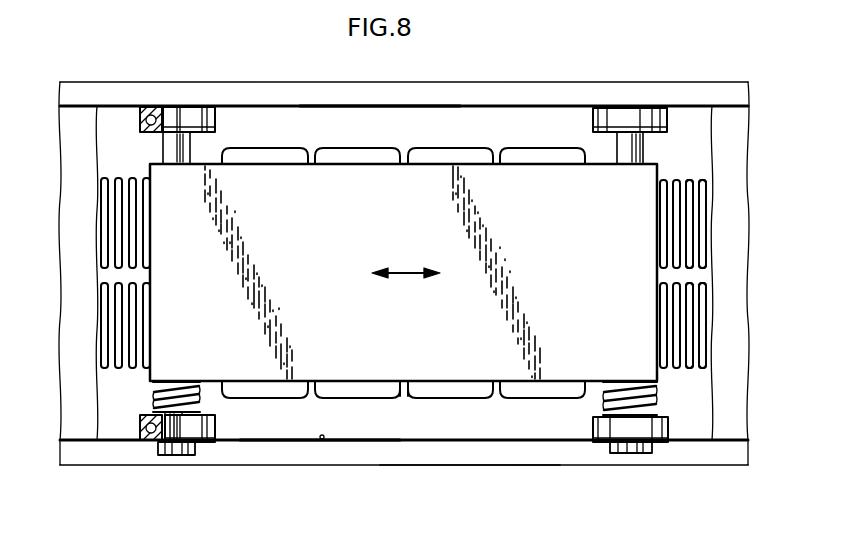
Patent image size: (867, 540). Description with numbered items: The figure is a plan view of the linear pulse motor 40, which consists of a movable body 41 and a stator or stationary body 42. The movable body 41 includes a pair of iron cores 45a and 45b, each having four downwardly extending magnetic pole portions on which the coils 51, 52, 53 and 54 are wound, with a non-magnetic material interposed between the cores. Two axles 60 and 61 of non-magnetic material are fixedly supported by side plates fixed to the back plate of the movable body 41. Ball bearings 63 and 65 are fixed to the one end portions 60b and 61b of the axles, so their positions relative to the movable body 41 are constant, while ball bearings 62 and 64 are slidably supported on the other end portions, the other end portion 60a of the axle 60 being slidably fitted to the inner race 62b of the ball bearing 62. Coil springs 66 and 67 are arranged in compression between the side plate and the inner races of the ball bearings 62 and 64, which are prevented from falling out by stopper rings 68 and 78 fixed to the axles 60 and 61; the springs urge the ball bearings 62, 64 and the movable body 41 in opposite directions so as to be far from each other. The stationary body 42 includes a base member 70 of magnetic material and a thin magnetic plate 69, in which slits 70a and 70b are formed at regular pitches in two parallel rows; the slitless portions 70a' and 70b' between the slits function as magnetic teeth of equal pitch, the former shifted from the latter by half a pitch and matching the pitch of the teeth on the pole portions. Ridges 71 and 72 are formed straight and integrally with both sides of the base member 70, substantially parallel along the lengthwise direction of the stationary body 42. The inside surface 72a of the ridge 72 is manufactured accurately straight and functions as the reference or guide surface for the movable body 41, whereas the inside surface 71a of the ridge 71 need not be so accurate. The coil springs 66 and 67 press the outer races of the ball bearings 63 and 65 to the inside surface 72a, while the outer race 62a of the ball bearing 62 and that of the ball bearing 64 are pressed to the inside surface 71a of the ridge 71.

The linear pulse motor 40 is at (254, 72).
The movable body 41 is at (343, 185).
The stationary body 42 is at (482, 471).
The iron core 45a is at (404, 398).
The iron core 45b is at (494, 147).
The coil 51 is at (250, 392).
The coil 52 is at (343, 392).
The coil 53 is at (445, 392).
The coil 54 is at (560, 392).
The axle 60 is at (167, 153).
The other end portion of axle 60a is at (167, 443).
The one end portion of axle 60b is at (168, 113).
The axle 61 is at (620, 155).
The one end portion of axle 61b is at (645, 145).
The ball bearing 62 is at (213, 441).
The outer race 62a is at (150, 441).
The inner race 62b is at (147, 441).
The ball bearing 63 is at (203, 107).
The ball bearing 64 is at (608, 430).
The ball bearing 65 is at (613, 115).
The coil spring 66 is at (153, 392).
The coil spring 67 is at (657, 398).
The stopper ring 68 is at (180, 444).
The magnetic plate 69 is at (113, 123).
The base member 70 is at (732, 127).
The slits 70a is at (732, 203).
The magnetic teeth 70a' is at (748, 224).
The magnetic teeth 70b' is at (745, 325).
The slits 70b is at (732, 343).
The ridge 71 is at (268, 450).
The inside surface of ridge 71a is at (323, 439).
The ridge 72 is at (327, 93).
The inside surface of ridge 72a is at (380, 108).
The stopper ring 78 is at (650, 445).